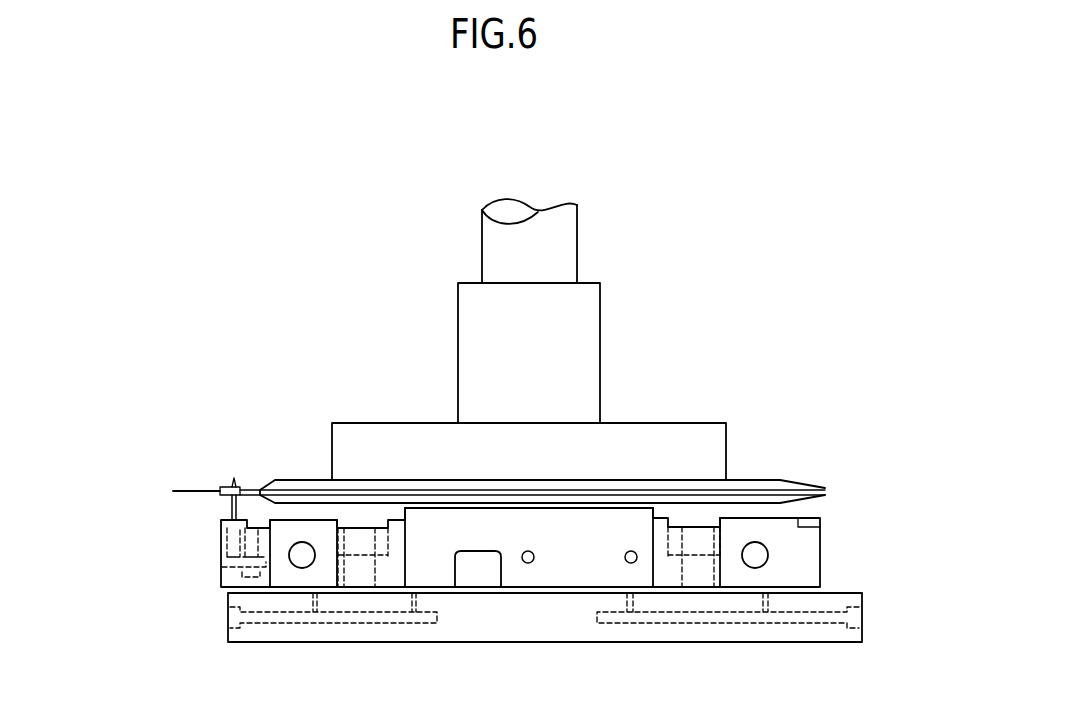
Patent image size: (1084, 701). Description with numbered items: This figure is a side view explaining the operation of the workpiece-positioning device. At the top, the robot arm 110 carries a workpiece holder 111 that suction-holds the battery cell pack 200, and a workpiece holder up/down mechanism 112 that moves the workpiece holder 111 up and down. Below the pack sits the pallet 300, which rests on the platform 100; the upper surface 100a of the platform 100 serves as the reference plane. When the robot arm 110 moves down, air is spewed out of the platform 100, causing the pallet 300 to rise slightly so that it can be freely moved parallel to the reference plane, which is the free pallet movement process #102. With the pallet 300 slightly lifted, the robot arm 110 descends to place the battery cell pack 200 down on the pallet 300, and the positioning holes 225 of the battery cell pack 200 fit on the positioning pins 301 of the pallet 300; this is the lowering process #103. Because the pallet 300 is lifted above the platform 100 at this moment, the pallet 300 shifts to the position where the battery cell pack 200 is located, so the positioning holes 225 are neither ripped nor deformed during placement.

The workpiece holder up/down mechanism 112 is at (577, 246).
The robot arm 110 is at (770, 346).
The workpiece holder 111 is at (712, 438).
The battery cell pack 200 is at (790, 480).
The positioning holes 225 is at (233, 489).
The positioning pins 301 is at (226, 509).
The pallet 300 is at (813, 542).
The upper surface of the platform 100a is at (843, 591).
The platform 100 is at (862, 594).
The lowering process 103 is at (178, 463).
The free pallet movement process 102 is at (178, 609).